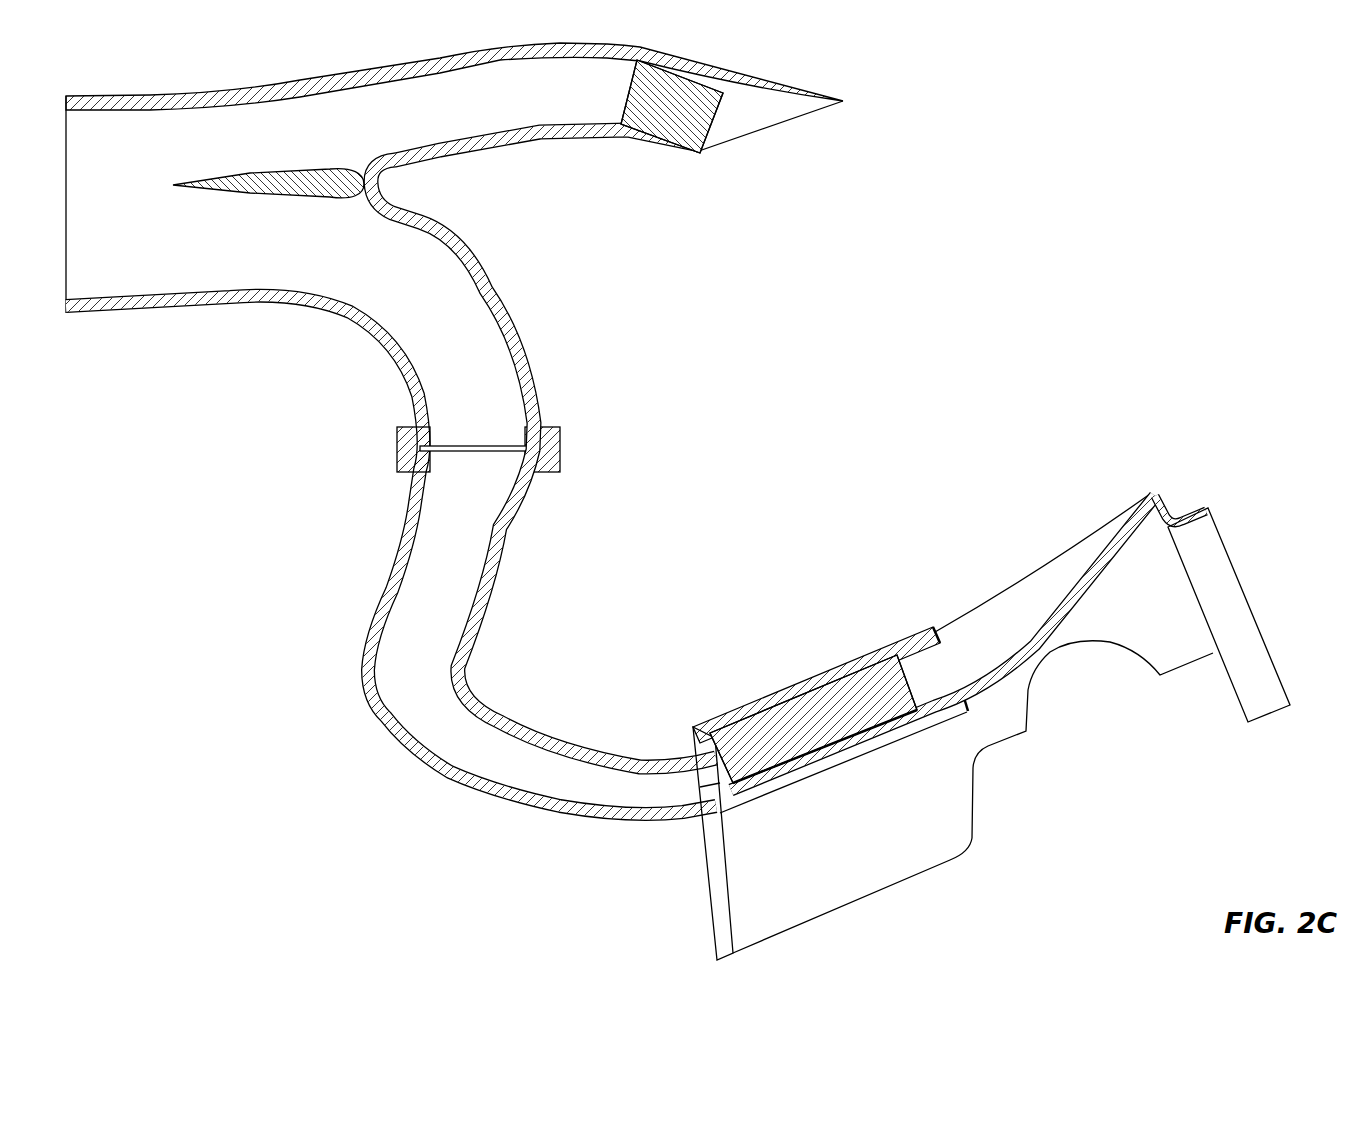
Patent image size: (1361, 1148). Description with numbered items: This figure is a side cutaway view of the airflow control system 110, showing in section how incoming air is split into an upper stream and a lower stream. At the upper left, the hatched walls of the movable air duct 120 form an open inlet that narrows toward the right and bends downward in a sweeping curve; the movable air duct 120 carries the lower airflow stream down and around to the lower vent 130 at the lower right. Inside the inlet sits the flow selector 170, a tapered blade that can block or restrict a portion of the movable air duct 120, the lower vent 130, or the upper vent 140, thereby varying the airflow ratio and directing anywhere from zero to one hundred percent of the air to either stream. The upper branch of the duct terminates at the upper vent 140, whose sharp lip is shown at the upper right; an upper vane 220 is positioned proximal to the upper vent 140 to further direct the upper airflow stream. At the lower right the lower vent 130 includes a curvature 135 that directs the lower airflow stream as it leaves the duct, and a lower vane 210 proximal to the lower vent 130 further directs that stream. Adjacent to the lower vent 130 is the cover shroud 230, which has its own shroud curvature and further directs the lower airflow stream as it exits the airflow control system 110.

The airflow control system 110 is at (1206, 80).
The movable air duct 120 is at (373, 718).
The lower vent 130 is at (1083, 548).
The curvature 135 is at (1037, 640).
The upper vent 140 is at (792, 131).
The flow selector 170 is at (222, 191).
The lower vane 210 is at (913, 690).
The upper vane 220 is at (718, 106).
The cover shroud 230 is at (1231, 560).